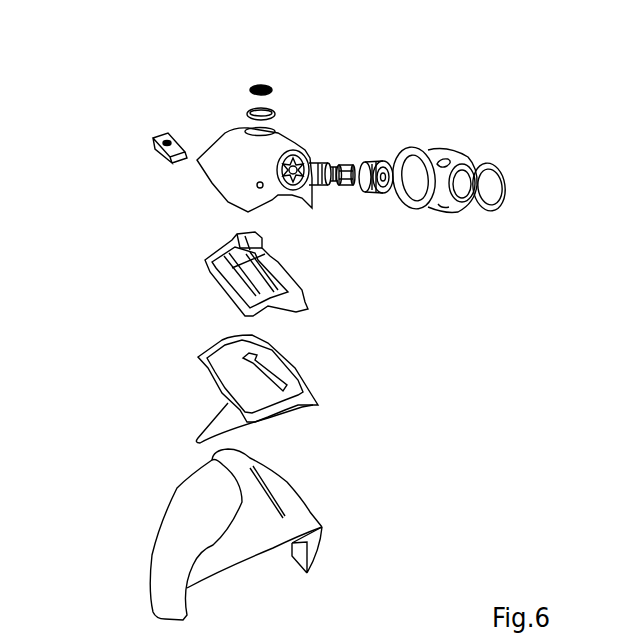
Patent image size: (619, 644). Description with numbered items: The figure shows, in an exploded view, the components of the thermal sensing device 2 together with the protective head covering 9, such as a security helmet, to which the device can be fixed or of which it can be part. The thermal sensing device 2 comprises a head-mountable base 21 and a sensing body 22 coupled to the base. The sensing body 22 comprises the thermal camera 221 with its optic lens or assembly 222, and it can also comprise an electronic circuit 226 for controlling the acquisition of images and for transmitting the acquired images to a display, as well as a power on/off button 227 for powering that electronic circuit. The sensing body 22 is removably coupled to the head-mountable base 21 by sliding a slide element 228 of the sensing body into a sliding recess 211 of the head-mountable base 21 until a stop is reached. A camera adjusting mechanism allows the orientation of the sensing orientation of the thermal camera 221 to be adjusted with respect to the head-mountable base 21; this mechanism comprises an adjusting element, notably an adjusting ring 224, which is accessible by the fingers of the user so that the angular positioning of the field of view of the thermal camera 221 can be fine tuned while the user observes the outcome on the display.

The thermal sensing device 2 is at (69, 191).
The head-mountable base 21 is at (183, 378).
The sensing body 22 is at (147, 122).
The protective head covering 9 is at (282, 483).
The sliding recess 211 is at (270, 373).
The thermal camera 221 is at (351, 164).
The optic lens or assembly 222 is at (467, 192).
The adjusting ring 224 is at (450, 158).
The electronic circuit 226 is at (333, 162).
The on/off button 227 is at (255, 83).
The slide element 228 is at (270, 283).